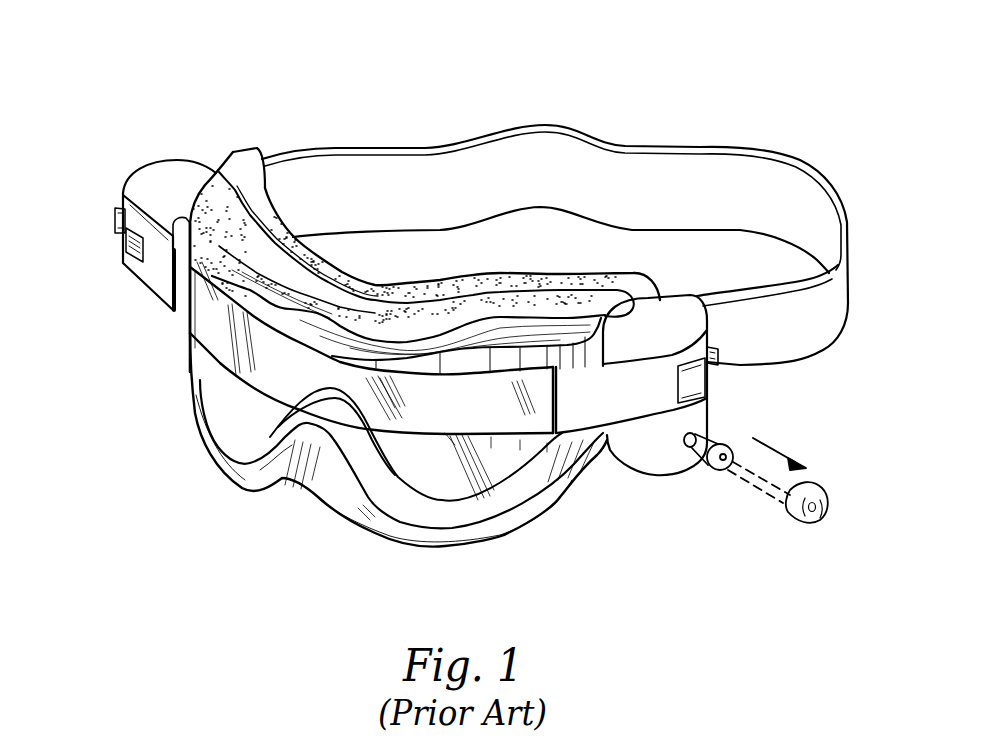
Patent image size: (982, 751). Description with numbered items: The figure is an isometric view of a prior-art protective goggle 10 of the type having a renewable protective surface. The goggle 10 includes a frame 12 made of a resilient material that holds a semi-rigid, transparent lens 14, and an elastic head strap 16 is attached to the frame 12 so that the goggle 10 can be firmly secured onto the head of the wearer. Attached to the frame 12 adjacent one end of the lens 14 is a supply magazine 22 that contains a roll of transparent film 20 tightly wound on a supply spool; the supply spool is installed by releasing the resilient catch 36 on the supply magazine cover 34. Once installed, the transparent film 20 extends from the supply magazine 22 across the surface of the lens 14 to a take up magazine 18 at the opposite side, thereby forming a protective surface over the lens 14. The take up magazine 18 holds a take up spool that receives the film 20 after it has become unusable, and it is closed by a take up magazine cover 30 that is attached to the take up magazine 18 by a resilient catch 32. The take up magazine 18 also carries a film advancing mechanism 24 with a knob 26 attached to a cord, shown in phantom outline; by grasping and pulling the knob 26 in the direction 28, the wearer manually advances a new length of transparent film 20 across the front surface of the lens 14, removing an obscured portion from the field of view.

The goggle 10 is at (708, 70).
The frame 12 is at (503, 527).
The lens 14 is at (537, 477).
The elastic head strap 16 is at (602, 172).
The take up magazine 18 is at (647, 317).
The transparent film 20 is at (193, 313).
The supply magazine 22 is at (134, 205).
The film advancing mechanism 24 is at (647, 467).
The knob 26 is at (703, 468).
The direction 28 is at (773, 443).
The take up magazine cover 30 is at (663, 377).
The resilient catch 32 is at (720, 357).
The supply magazine cover 34 is at (157, 277).
The resilient catch 36 is at (113, 218).